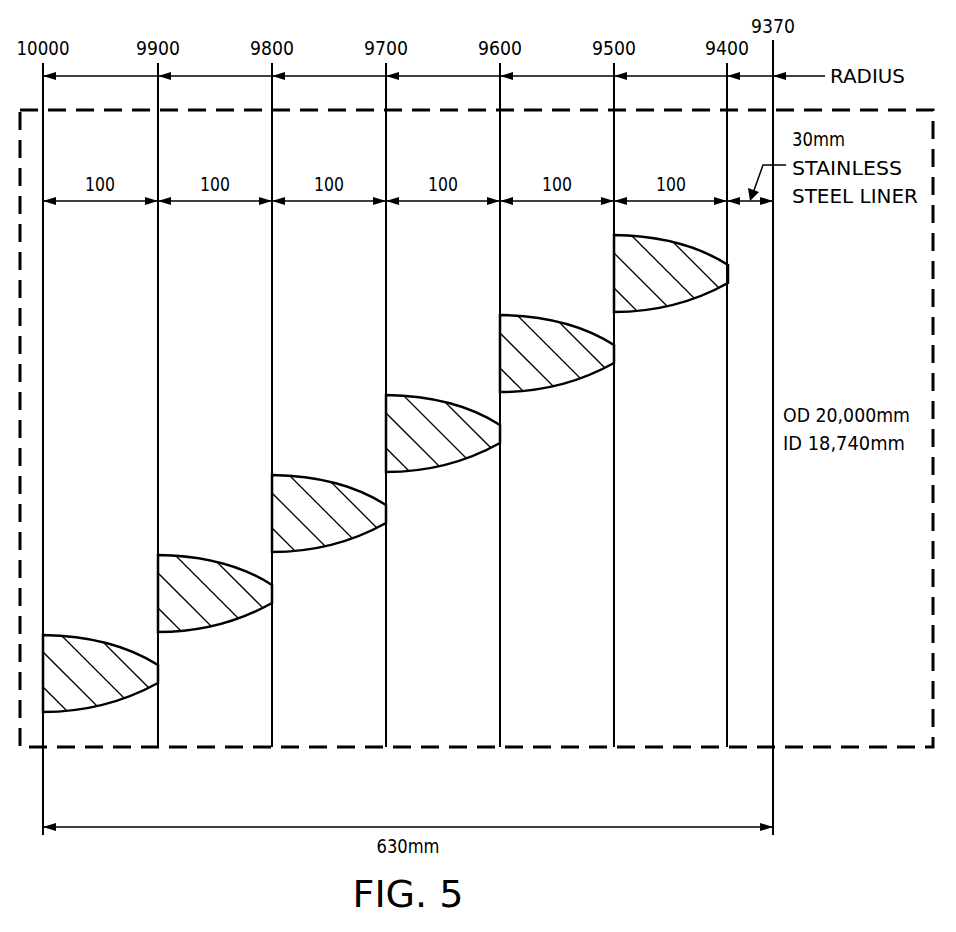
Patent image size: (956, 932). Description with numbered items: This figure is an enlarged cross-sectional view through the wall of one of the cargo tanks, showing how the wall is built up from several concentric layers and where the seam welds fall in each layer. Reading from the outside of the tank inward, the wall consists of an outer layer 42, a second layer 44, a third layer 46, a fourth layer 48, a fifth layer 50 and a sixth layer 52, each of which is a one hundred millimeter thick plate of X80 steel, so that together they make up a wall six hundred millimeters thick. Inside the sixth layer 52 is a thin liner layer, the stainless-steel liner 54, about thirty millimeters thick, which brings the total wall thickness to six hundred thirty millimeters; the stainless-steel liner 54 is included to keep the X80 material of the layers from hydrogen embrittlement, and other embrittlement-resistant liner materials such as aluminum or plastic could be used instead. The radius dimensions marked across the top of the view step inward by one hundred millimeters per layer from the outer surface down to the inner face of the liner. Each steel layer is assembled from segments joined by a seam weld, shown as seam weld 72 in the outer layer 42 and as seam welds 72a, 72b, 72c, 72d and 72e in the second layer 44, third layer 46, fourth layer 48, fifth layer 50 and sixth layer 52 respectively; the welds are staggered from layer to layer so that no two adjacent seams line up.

The outer layer 42 is at (107, 740).
The second layer 44 is at (218, 740).
The third layer 46 is at (327, 740).
The fourth layer 48 is at (440, 740).
The fifth layer 50 is at (573, 740).
The sixth layer 52 is at (680, 740).
The stainless-steel liner 54 is at (764, 716).
The seam weld 72 is at (88, 634).
The seam weld 72a is at (202, 554).
The seam weld 72b is at (316, 474).
The seam weld 72c is at (430, 394).
The seam weld 72d is at (546, 314).
The seam weld 72e is at (667, 313).